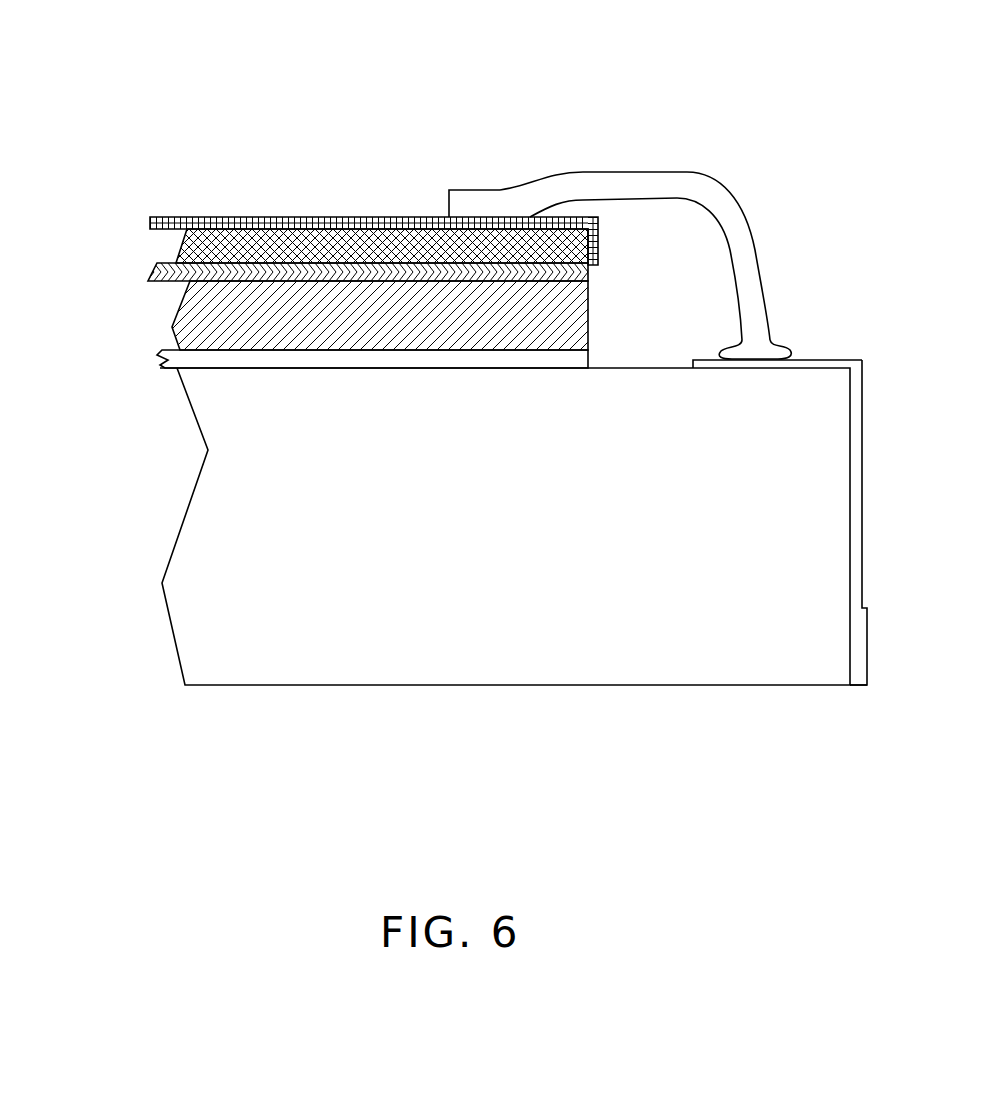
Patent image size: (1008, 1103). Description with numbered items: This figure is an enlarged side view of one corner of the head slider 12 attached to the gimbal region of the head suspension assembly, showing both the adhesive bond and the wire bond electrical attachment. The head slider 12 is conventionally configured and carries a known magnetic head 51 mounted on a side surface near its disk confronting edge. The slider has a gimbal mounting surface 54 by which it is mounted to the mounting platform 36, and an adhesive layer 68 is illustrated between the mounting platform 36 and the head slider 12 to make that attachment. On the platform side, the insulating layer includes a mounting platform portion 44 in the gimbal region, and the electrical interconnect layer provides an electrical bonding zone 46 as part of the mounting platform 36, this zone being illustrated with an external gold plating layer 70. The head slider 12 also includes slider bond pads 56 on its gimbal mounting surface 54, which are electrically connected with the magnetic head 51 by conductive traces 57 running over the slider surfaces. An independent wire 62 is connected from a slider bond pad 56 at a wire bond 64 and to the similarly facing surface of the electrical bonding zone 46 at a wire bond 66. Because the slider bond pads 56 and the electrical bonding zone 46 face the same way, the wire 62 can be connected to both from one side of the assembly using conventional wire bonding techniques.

The head slider 12 is at (283, 605).
The mounting platform 36 is at (180, 318).
The mounting platform portion 44 is at (170, 278).
The electrical bonding zone 46 is at (180, 250).
The magnetic head 51 is at (862, 662).
The gimbal mounting surface 54 is at (403, 368).
The slider bond pad 56 is at (800, 362).
The conductive trace 57 is at (857, 423).
The wire 62 is at (715, 197).
The wire bond 64 is at (763, 357).
The wire bond 66 is at (500, 203).
The adhesive layer 68 is at (212, 358).
The gold plating layer 70 is at (380, 222).